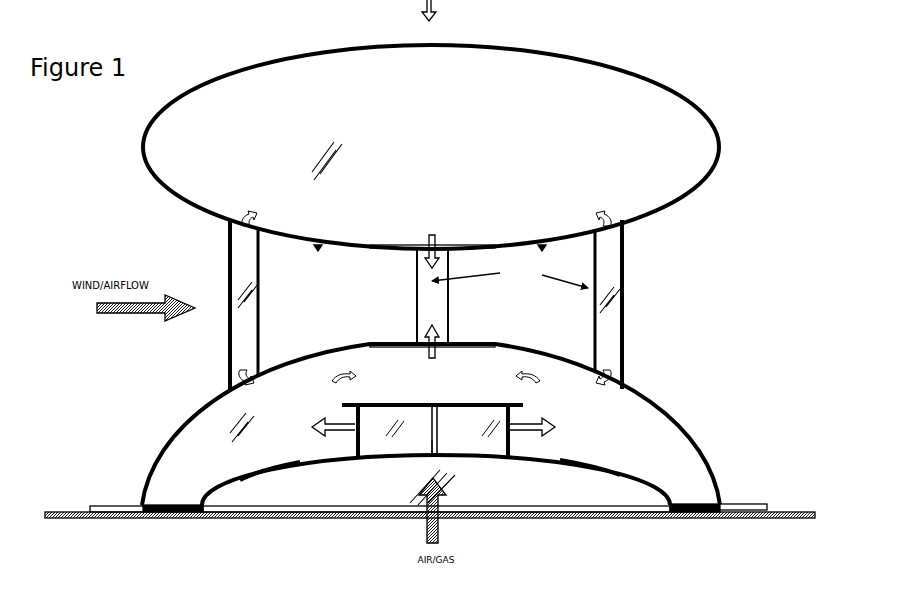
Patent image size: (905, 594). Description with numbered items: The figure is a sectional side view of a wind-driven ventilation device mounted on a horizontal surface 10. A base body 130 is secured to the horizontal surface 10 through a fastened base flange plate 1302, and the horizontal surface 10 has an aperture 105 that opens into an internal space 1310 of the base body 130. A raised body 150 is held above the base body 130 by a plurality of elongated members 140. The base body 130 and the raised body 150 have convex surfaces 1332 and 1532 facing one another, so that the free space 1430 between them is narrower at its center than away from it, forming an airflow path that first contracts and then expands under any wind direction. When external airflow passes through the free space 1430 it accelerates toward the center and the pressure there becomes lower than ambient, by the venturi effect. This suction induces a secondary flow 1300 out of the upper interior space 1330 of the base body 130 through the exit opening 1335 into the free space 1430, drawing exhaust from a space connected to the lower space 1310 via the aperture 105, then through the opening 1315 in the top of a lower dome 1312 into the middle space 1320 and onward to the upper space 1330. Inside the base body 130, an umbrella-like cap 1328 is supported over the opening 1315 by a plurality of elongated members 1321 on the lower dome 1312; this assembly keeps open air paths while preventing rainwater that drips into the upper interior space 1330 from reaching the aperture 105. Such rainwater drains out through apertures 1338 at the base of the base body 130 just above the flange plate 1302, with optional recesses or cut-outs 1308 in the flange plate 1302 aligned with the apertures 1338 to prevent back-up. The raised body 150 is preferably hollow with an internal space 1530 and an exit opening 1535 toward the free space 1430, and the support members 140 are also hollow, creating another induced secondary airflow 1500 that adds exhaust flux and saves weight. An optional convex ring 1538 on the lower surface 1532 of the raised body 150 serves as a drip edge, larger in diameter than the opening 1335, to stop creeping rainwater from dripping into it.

The horizontal surface 10 is at (788, 508).
The aperture 105 is at (562, 508).
The base body 130 is at (684, 398).
The elongated members 140 is at (510, 277).
The raised body 150 is at (697, 90).
The secondary flow 1300 is at (426, 360).
The base flange plate 1302 is at (690, 503).
The recesses or cut-outs 1308 is at (108, 505).
The internal space 1310 is at (517, 490).
The lower dome 1312 is at (313, 467).
The opening 1315 is at (467, 462).
The middle space 1320 is at (441, 436).
The elongated members 1321 is at (427, 439).
The umbrella-like cap 1328 is at (413, 402).
The upper interior space 1330 is at (272, 408).
The convex surface 1332 is at (207, 391).
The opening 1335 is at (462, 343).
The apertures 1338 is at (140, 503).
The free space 1430 is at (352, 309).
The induced secondary airflow 1500 is at (424, 234).
The internal space 1530 is at (450, 156).
The convex surface 1532 is at (206, 215).
The exit opening 1535 is at (470, 243).
The convex ring 1538 is at (318, 248).